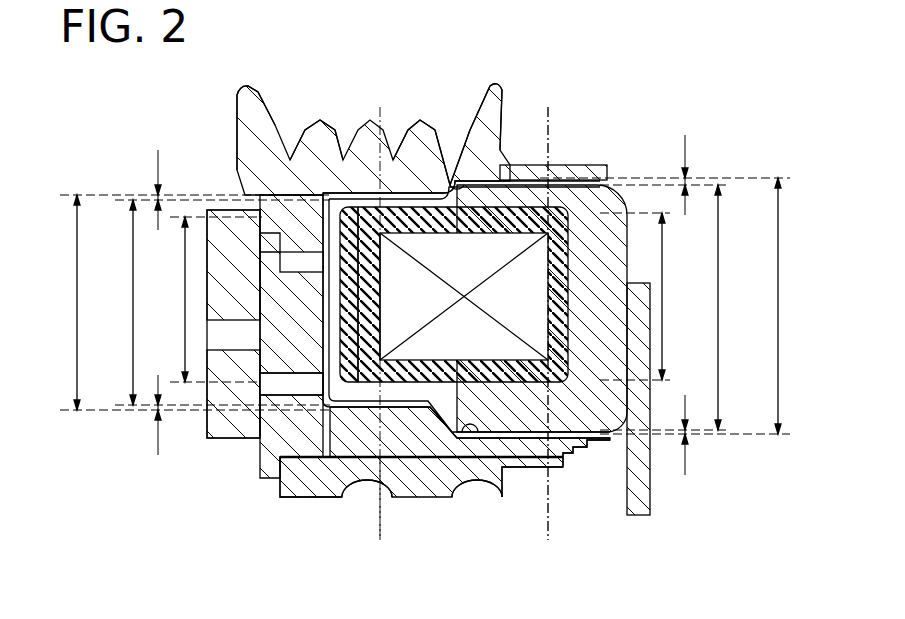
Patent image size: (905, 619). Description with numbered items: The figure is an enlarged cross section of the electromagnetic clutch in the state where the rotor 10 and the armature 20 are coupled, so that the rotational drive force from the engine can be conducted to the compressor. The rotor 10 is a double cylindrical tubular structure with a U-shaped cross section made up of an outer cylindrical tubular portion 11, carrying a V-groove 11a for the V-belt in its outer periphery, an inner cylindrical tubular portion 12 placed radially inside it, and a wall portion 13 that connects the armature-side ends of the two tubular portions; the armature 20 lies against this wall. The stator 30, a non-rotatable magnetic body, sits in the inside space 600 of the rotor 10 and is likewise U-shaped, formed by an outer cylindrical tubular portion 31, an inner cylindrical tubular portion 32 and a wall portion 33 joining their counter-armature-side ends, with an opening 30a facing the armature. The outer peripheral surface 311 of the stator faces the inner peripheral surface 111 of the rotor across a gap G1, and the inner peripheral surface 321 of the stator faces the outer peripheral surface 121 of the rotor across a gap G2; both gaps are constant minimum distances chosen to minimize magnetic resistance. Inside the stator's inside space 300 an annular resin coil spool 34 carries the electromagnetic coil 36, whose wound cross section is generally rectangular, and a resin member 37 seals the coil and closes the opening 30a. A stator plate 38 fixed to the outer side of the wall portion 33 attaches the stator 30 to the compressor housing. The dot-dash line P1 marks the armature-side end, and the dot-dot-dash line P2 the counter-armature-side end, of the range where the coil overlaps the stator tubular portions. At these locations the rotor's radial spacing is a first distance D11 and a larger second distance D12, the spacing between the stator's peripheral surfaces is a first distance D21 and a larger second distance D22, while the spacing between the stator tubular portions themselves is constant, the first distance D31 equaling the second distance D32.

The rotor 10 is at (316, 180).
The outer cylindrical tubular portion 11 is at (420, 160).
The V-groove 11a is at (305, 140).
The inner peripheral surface 111 is at (452, 178).
The inside space 600 is at (267, 110).
The inner cylindrical tubular portion 12 is at (445, 403).
The outer peripheral surface 121 is at (470, 432).
The wall portion 13 is at (275, 358).
The armature 20 is at (222, 290).
The stator 30 is at (573, 208).
The opening 30a is at (376, 490).
The inside space 300 is at (417, 272).
The outer cylindrical tubular portion 31 is at (505, 188).
The outer peripheral surface 311 is at (530, 165).
The inner cylindrical tubular portion 32 is at (545, 462).
The inner peripheral surface 321 is at (520, 412).
The wall portion 33 is at (590, 165).
The coil spool 34 is at (420, 437).
The electromagnetic coil 36 is at (402, 233).
The resin member 37 is at (310, 470).
The stator plate 38 is at (641, 497).
The armature side end location P1 is at (375, 540).
The counter-armature side end location P2 is at (557, 510).
The first distance D11 is at (77, 296).
The first distance D21 is at (133, 296).
The first distance D31 is at (185, 296).
The second distance D12 is at (778, 296).
The second distance D22 is at (718, 296).
The second distance D32 is at (662, 296).
The gap G1 is at (158, 196).
The gap G2 is at (158, 408).